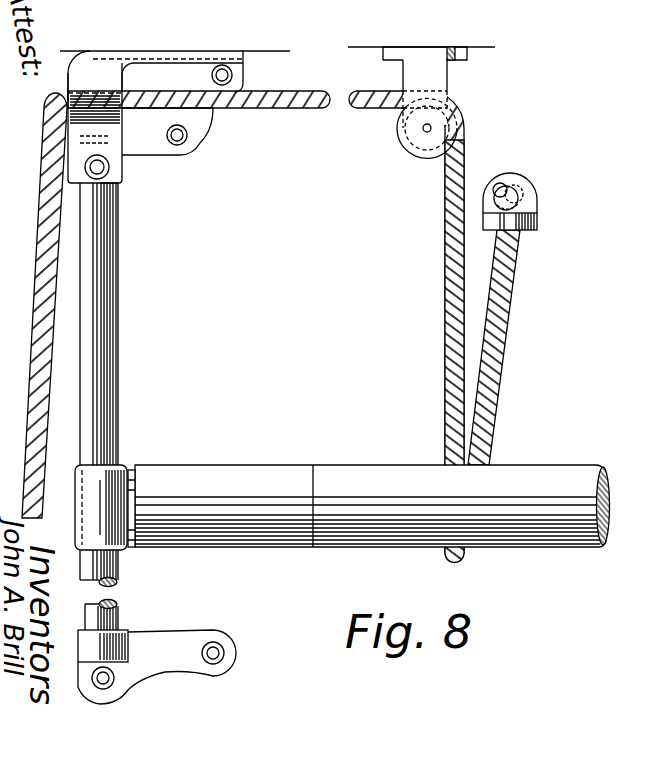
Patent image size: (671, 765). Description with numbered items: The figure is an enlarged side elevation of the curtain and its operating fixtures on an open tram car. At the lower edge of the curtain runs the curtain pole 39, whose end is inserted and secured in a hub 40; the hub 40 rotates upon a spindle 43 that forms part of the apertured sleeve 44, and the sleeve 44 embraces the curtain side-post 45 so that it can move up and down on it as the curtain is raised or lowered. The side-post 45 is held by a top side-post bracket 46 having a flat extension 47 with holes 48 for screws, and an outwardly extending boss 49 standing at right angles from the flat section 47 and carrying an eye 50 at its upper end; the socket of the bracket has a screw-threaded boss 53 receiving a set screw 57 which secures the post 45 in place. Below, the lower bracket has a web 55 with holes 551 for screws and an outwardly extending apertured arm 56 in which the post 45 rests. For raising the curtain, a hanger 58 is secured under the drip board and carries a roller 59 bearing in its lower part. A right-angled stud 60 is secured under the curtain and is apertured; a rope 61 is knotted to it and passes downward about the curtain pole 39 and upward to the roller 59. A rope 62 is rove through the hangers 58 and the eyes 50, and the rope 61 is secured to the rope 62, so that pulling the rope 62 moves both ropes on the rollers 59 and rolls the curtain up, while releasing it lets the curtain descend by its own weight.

The curtain pole 39 is at (567, 468).
The hub 40 is at (226, 476).
The spindle 43 is at (136, 473).
The apertured sleeve 44 is at (101, 507).
The curtain side-post 45 is at (116, 371).
The top side-post bracket 46 is at (182, 93).
The flat extension 47 is at (190, 118).
The holes 48 is at (232, 75).
The boss 49 is at (140, 164).
The eye 50 is at (65, 82).
The boss 53 is at (110, 170).
The web 55 is at (80, 695).
The holes 551 is at (225, 653).
The arm 56 is at (85, 638).
The set screw 57 is at (108, 181).
The hanger 58 is at (425, 87).
The roller 59 is at (420, 158).
The right-angled stud 60 is at (537, 205).
The rope 61 is at (446, 259).
The rope 62 is at (30, 390).